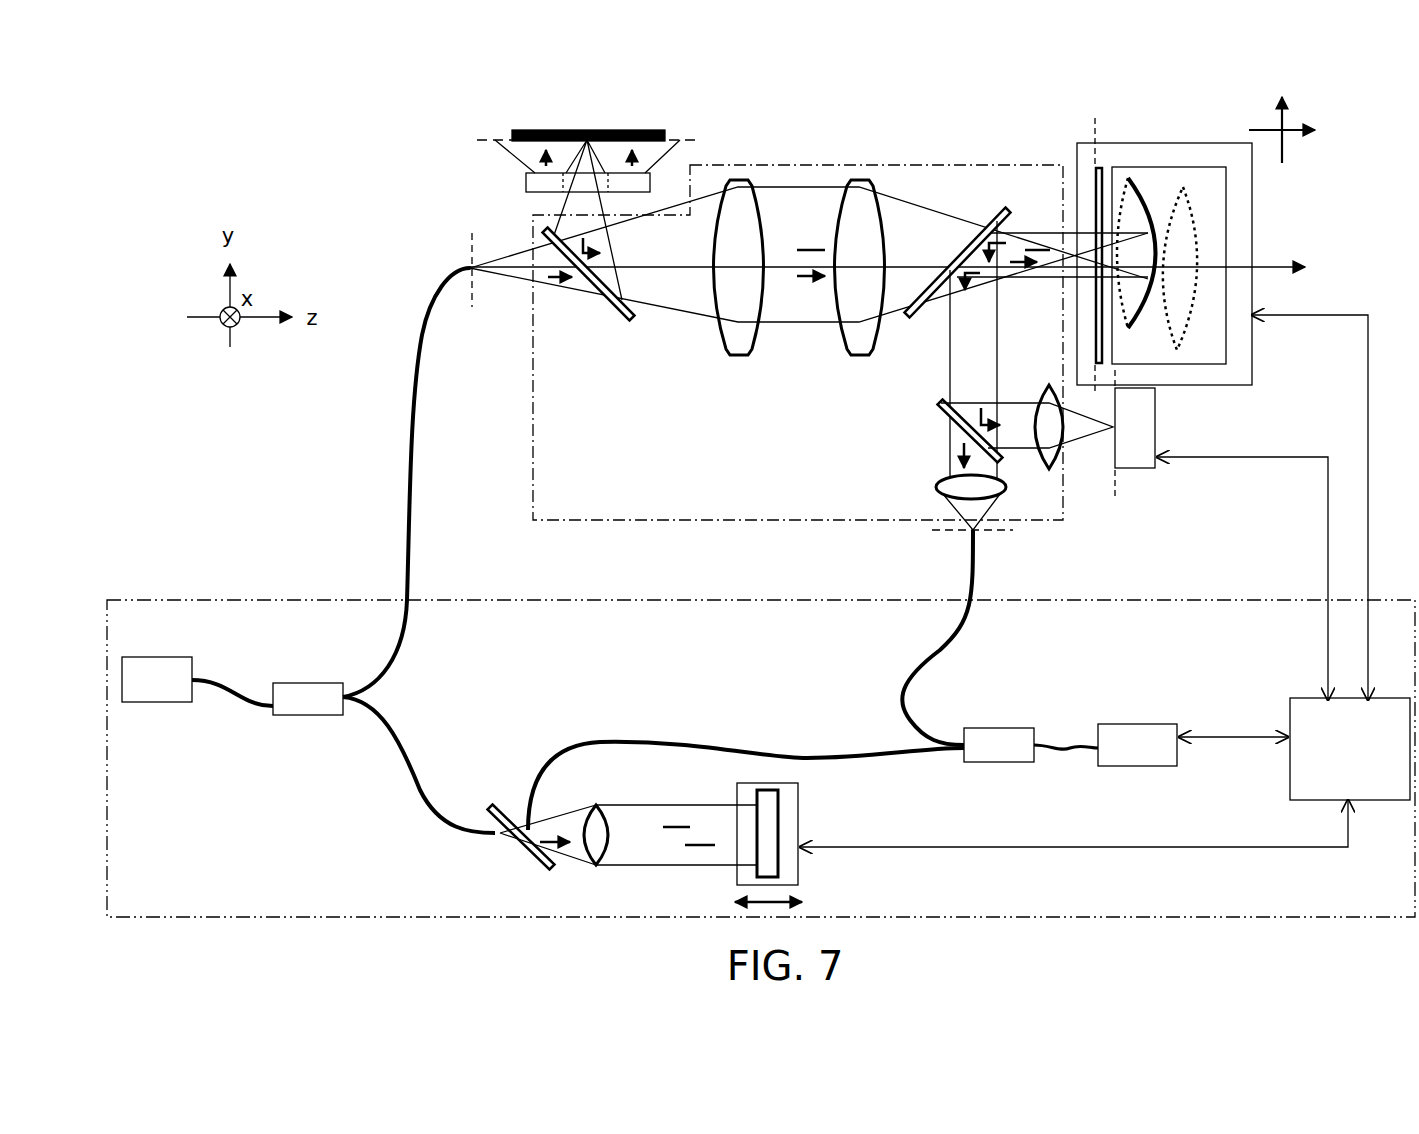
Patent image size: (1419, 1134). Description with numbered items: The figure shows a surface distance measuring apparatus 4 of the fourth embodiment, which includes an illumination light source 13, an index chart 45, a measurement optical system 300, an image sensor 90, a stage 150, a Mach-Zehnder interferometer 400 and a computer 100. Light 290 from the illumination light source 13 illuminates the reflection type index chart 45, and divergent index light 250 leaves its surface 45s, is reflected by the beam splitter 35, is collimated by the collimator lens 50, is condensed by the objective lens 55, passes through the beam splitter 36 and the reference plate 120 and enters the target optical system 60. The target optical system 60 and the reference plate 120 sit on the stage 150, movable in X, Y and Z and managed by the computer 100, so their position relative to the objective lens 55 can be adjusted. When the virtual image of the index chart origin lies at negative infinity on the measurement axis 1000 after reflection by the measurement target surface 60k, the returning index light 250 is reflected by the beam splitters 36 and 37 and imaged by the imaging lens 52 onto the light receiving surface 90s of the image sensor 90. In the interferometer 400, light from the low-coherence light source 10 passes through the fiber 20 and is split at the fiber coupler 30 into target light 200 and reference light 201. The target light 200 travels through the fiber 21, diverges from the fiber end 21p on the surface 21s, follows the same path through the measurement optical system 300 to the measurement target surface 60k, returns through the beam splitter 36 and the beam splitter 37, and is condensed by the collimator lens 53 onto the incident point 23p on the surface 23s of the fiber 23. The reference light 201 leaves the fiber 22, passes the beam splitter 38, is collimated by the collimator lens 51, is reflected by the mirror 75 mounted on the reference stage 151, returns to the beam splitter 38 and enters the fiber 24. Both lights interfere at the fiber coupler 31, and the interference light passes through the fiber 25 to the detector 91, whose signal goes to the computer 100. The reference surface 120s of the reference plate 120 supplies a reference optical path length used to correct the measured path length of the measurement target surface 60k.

The surface distance measuring apparatus 4 is at (865, 89).
The low-coherence light source 10 is at (160, 665).
The illumination light source 13 is at (526, 186).
The fiber 20 is at (235, 690).
The fiber 21 is at (410, 620).
The surface including the exit point 21s is at (470, 240).
The fiber end (exit point) 21p is at (480, 275).
The fiber 22 is at (425, 810).
The fiber 23 is at (900, 715).
The fiber end (incident point) 23p is at (945, 530).
The surface including the incident point 23s is at (990, 535).
The fiber 24 is at (615, 742).
The fiber 25 is at (1068, 742).
The fiber coupler 30 is at (298, 690).
The fiber coupler 31 is at (988, 735).
The beam splitter 35 is at (632, 322).
The beam splitter 36 is at (998, 210).
The beam splitter 37 is at (937, 405).
The beam splitter 38 is at (495, 805).
The index chart 45 is at (512, 133).
The surface of the index chart 45s is at (673, 138).
The collimator lens 50 is at (736, 352).
The collimator lens 51 is at (603, 805).
The imaging lens 52 is at (1046, 470).
The collimator lens 53 is at (937, 486).
The objective lens 55 is at (864, 340).
The target optical system 60 is at (1193, 365).
The measurement target surface 60k is at (1133, 178).
The mirror 75 is at (778, 815).
The image sensor 90 is at (1147, 460).
The light receiving surface 90s is at (1113, 500).
The detector 91 is at (1145, 733).
The computer (calculating unit) 100 is at (1308, 770).
The reference plate 120 is at (1095, 175).
The optical path length reference surface 120s is at (1093, 130).
The stage (adjusting unit) 150 is at (1222, 148).
The stage (optical path length changing unit, reference stage) 151 is at (798, 865).
The target light 200 is at (560, 290).
The reference light 201 is at (540, 835).
The index light 250 is at (795, 248).
The light 290 is at (607, 130).
The measurement optical system 300 is at (900, 165).
The interferometer 400 is at (487, 600).
The measurement axis 1000 is at (1283, 264).